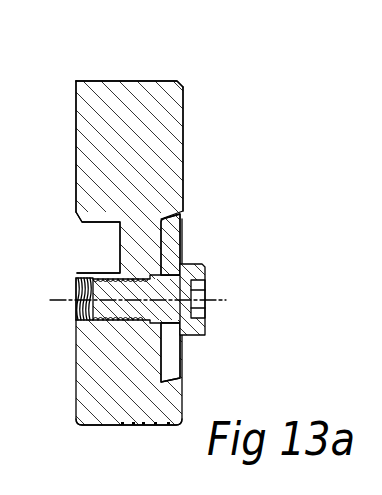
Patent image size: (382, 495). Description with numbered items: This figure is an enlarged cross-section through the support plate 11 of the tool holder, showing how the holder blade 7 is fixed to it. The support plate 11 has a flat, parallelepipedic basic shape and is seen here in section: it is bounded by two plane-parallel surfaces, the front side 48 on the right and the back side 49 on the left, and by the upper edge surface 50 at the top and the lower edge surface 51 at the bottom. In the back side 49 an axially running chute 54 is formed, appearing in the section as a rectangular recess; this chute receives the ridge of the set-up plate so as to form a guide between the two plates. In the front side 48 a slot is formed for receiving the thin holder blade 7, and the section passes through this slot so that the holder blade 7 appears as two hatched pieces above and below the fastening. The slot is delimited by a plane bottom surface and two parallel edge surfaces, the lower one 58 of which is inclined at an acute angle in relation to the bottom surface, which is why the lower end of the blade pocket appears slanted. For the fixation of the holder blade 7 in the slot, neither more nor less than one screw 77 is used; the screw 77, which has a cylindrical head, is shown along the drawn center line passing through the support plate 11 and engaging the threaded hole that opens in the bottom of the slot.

The support plate 11 is at (216, 100).
The upper edge surface 50 is at (125, 81).
The front side 48 is at (183, 148).
The back side 49 is at (76, 152).
The lower edge surface 51 is at (104, 426).
The chute 54 is at (97, 240).
The holder blade 7 is at (193, 231).
The lower edge surface of slot 58 is at (169, 382).
The screw 77 is at (217, 273).